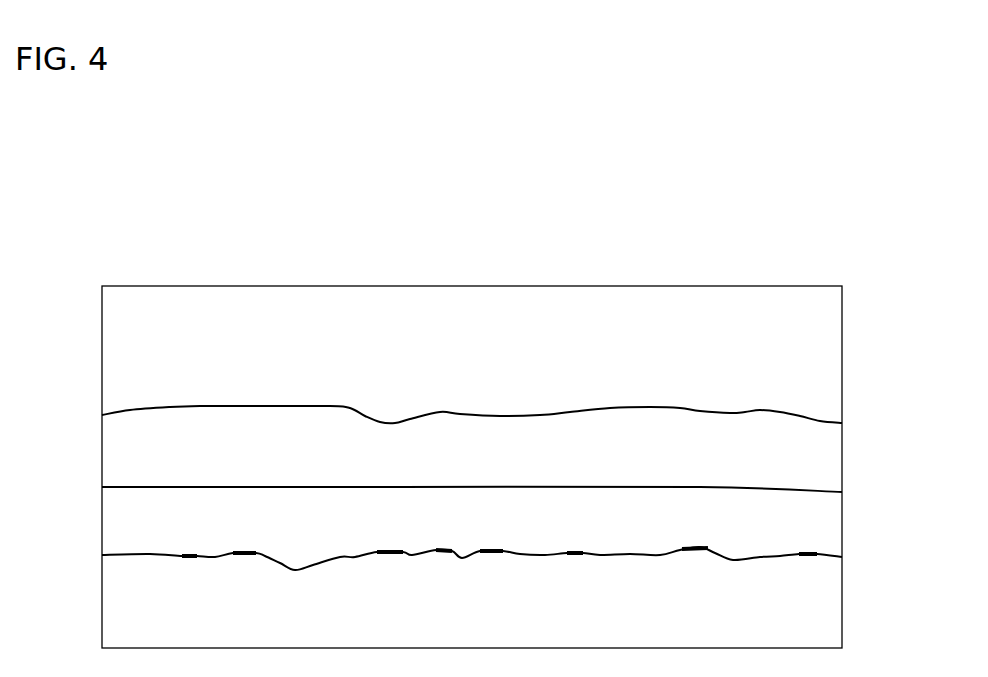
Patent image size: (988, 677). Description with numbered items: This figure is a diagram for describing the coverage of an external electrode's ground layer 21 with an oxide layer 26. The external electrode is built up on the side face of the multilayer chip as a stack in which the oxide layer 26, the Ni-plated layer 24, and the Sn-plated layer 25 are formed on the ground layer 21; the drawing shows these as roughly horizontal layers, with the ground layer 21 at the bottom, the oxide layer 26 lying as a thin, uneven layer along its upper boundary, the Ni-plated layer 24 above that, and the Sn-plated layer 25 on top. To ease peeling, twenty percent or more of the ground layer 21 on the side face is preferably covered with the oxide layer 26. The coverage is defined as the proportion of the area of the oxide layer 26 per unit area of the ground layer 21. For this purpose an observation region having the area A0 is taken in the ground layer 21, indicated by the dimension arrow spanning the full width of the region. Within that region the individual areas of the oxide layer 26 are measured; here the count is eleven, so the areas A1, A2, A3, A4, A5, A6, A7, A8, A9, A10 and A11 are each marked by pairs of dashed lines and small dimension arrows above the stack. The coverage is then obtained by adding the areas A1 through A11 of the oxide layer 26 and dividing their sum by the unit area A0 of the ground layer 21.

The ground layer 21 is at (827, 588).
The Ni-plated layer 24 is at (830, 512).
The Sn-plated layer 25 is at (832, 462).
The oxide layer 26 is at (825, 555).
The unit area of the ground layer A0 is at (102, 623).
The area of the oxide layer A1 is at (197, 556).
The area of the oxide layer A2 is at (256, 553).
The area of the oxide layer A3 is at (313, 565).
The area of the oxide layer A4 is at (403, 552).
The area of the oxide layer A5 is at (452, 551).
The area of the oxide layer A6 is at (503, 551).
The area of the oxide layer A7 is at (583, 553).
The area of the oxide layer A8 is at (619, 555).
The area of the oxide layer A9 is at (708, 548).
The area of the oxide layer A10 is at (749, 560).
The area of the oxide layer A11 is at (817, 554).